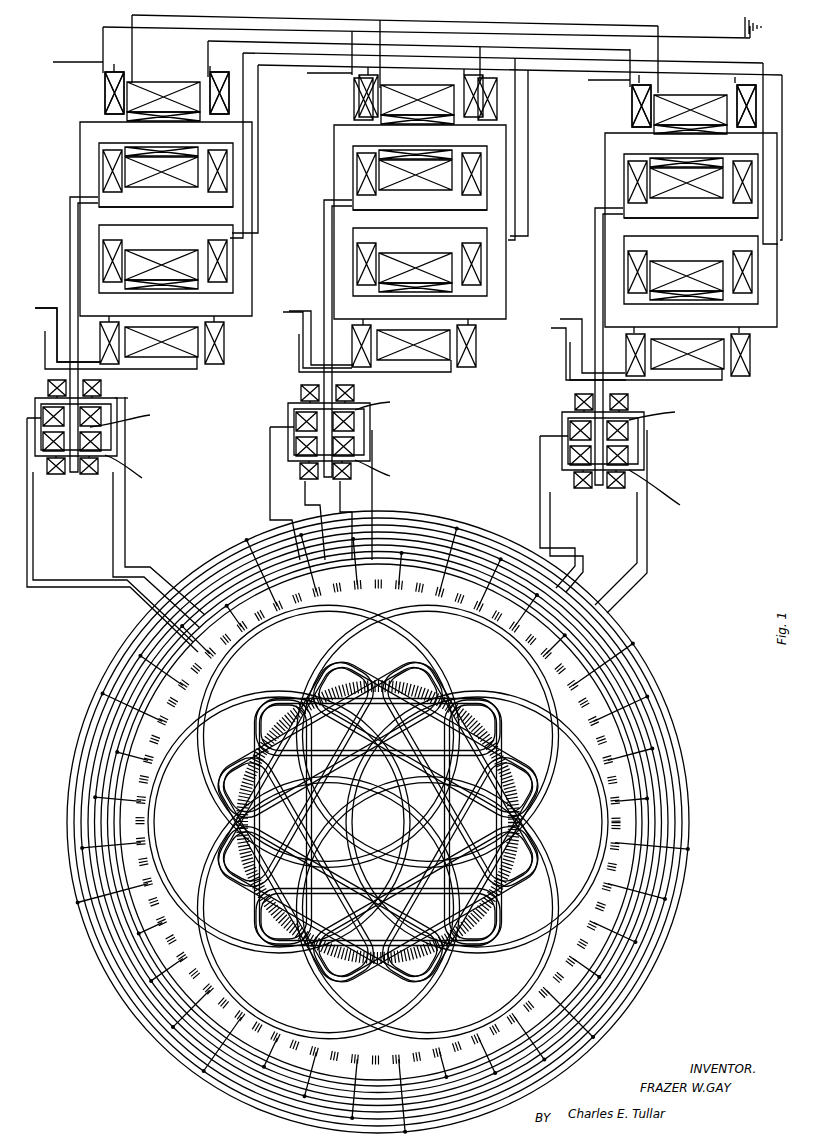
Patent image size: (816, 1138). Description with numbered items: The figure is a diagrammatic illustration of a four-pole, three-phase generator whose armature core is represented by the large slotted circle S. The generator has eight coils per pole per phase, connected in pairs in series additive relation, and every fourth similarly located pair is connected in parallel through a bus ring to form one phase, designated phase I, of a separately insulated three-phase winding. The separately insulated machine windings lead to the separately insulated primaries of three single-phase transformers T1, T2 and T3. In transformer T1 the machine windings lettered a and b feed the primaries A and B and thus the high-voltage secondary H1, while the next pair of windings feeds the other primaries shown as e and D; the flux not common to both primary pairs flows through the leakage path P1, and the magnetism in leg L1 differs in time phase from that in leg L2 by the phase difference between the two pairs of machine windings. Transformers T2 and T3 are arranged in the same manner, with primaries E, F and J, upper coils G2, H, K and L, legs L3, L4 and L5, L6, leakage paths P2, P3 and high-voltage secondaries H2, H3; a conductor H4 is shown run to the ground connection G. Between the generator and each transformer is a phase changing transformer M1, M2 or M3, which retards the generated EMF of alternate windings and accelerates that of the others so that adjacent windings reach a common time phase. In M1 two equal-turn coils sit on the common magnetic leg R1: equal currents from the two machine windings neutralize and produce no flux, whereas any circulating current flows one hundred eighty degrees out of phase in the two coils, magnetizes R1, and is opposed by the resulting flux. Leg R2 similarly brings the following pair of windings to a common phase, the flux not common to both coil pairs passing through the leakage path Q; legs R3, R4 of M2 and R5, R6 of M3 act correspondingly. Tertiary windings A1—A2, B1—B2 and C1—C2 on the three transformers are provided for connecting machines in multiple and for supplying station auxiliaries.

The single phase transformer T1 is at (140, 264).
The single phase transformer T2 is at (390, 272).
The single phase transformer T3 is at (657, 280).
The magnetic leg L1 is at (165, 163).
The magnetic leg L2 is at (165, 274).
The transformer winding L3 is at (419, 165).
The transformer winding L4 is at (419, 277).
The transformer winding L5 is at (690, 170).
The transformer winding L6 is at (690, 284).
The leakage path P1 is at (166, 214).
The primary winding P2 is at (420, 217).
The primary winding P3 is at (691, 220).
The high voltage secondary H1 is at (129, 283).
The auxiliary coil H2 is at (375, 287).
The auxiliary coil H3 is at (643, 295).
The conductor H4 is at (670, 37).
The phase changing transformer M1 is at (109, 506).
The phase changing transformer M2 is at (333, 458).
The phase changing transformer M3 is at (611, 491).
The magnetic leg R1 is at (133, 472).
The magnetic leg R2 is at (129, 388).
The resistor R3 is at (381, 471).
The resistor R4 is at (381, 405).
The resistor R5 is at (663, 492).
The resistor R6 is at (662, 417).
The leakage path Q is at (129, 420).
The tertiary winding A1 is at (64, 324).
The tertiary winding A2 is at (138, 88).
The tertiary winding B1 is at (315, 330).
The tertiary winding B2 is at (386, 98).
The tertiary winding C1 is at (585, 344).
The tertiary winding C2 is at (663, 107).
The ground G is at (769, 34).
The coil G2 is at (359, 99).
The coil H is at (490, 99).
The coil K is at (634, 106).
The coil L is at (747, 106).
The coil e is at (114, 88).
The transformer primary D is at (220, 88).
The transformer primary A is at (111, 246).
The transformer primary B is at (216, 246).
The coil E is at (365, 247).
The coil F is at (480, 247).
The phase I is at (636, 254).
The coil J is at (745, 257).
The stator winding diagram S is at (378, 822).